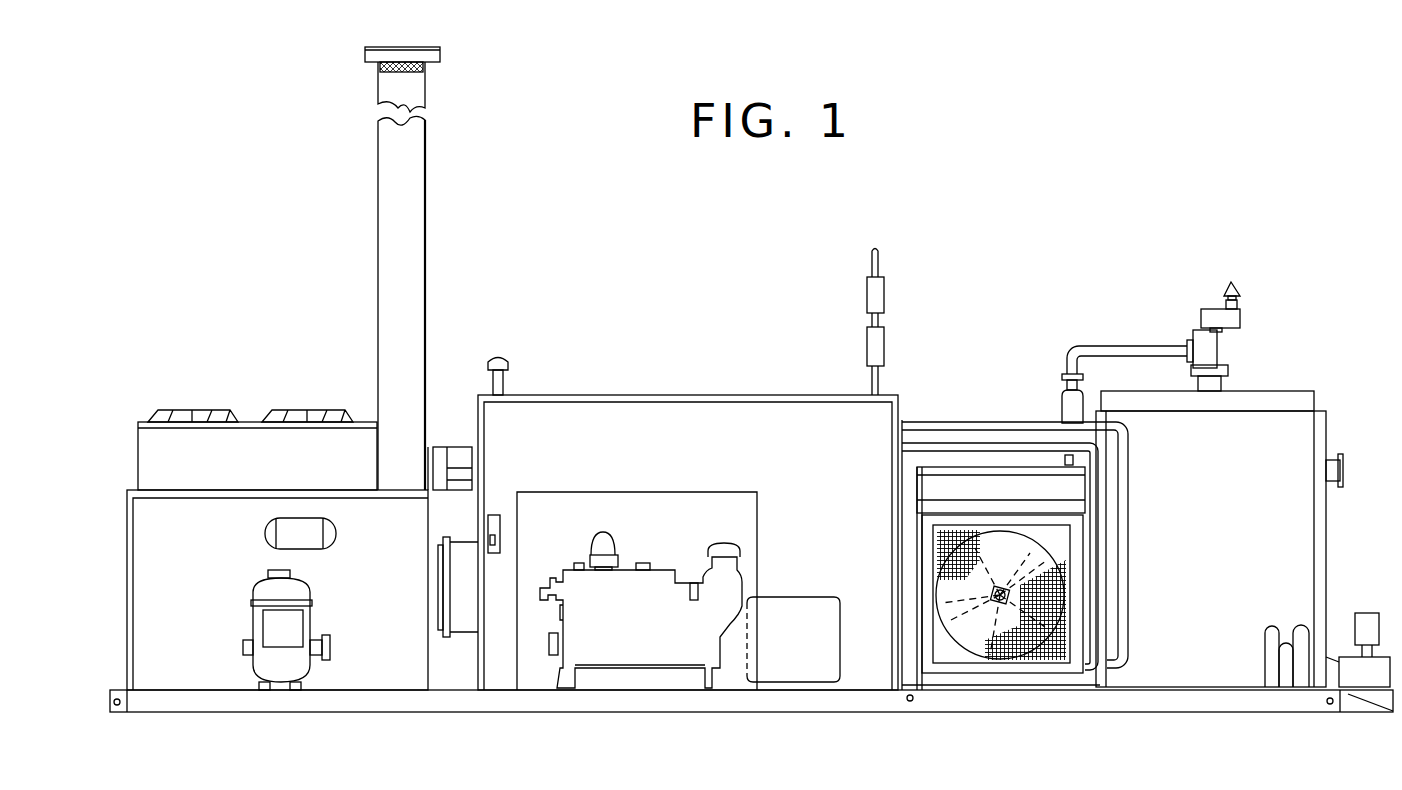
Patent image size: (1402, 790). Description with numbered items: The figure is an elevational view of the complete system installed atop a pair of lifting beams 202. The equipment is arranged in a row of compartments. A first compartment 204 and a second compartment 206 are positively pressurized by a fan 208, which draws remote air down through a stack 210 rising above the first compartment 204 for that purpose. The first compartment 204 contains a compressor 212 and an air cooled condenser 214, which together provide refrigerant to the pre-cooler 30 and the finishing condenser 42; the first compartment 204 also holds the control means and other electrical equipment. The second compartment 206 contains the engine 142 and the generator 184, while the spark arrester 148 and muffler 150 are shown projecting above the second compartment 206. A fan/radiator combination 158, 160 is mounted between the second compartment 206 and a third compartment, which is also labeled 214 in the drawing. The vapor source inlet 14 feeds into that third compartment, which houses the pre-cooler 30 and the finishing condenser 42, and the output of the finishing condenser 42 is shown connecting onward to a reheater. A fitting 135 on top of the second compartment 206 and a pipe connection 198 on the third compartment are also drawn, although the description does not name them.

The vapor source inlet 14 is at (1343, 468).
The pre-cooler 30 is at (1245, 480).
The finishing condenser 42 is at (1238, 428).
The vent 135 is at (498, 357).
The engine 142 is at (644, 650).
The spark arrester 148 is at (868, 338).
The muffler 150 is at (868, 296).
The fan 158 is at (1015, 592).
The radiator 160 is at (990, 655).
The generator 184 is at (785, 660).
The pipe connection 198 is at (1062, 408).
The lifting beams 202 is at (228, 711).
The first compartment 204 is at (127, 600).
The second compartment 206 is at (640, 403).
The fan 208 is at (442, 447).
The stack 210 is at (425, 165).
The compressor 212 is at (283, 665).
The air cooled condenser 214 is at (290, 447).